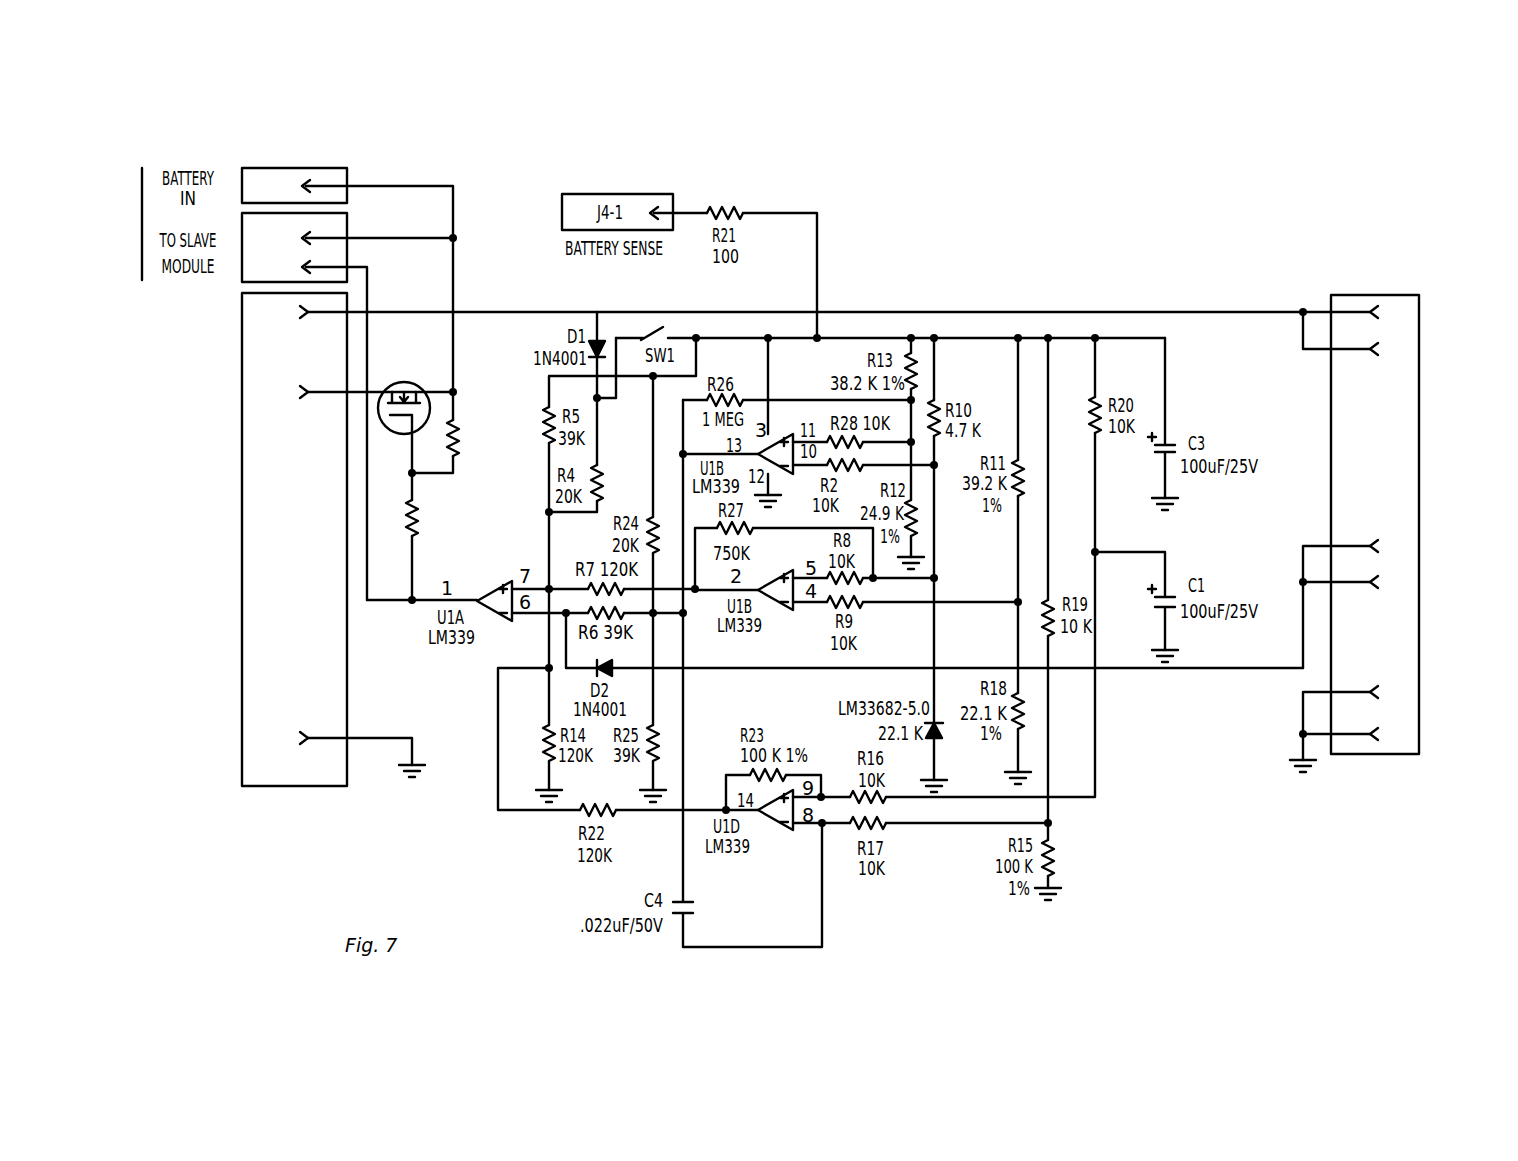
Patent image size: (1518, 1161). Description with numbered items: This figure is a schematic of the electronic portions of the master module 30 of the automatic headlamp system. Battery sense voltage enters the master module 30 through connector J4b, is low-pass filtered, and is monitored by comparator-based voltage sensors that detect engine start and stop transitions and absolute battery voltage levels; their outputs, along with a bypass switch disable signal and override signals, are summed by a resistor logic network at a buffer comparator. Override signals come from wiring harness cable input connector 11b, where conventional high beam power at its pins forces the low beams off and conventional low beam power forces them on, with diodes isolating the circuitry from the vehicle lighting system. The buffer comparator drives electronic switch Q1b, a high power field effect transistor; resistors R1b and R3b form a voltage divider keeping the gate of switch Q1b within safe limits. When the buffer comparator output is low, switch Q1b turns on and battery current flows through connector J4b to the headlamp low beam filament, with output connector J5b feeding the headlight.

The master module 30 is at (1305, 194).
The wiring harness cable input connector 11b is at (1374, 466).
The connector J4b is at (243, 241).
The output connector to headlight J5b is at (302, 617).
The electronic switch Q1b is at (382, 396).
The resistor R1b is at (454, 434).
The resistor R3b is at (433, 538).